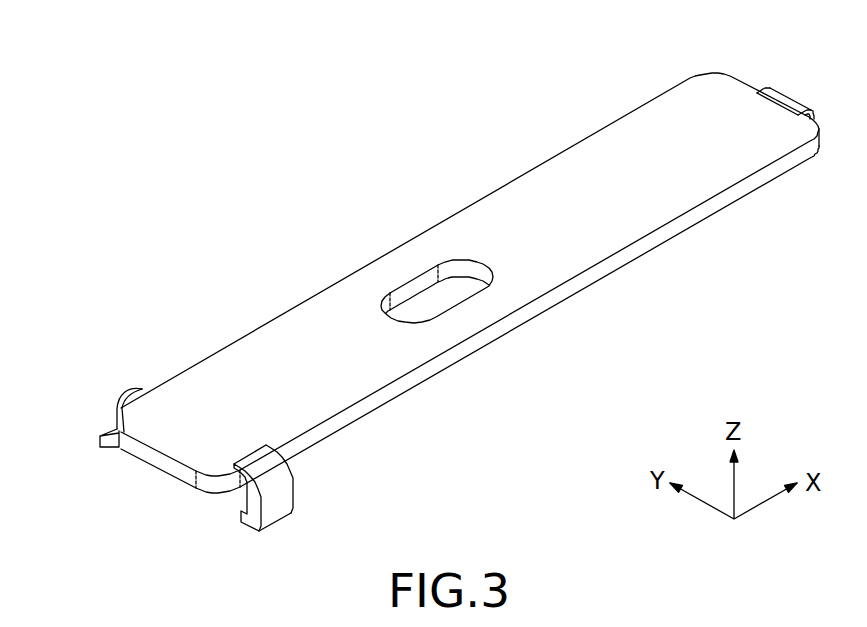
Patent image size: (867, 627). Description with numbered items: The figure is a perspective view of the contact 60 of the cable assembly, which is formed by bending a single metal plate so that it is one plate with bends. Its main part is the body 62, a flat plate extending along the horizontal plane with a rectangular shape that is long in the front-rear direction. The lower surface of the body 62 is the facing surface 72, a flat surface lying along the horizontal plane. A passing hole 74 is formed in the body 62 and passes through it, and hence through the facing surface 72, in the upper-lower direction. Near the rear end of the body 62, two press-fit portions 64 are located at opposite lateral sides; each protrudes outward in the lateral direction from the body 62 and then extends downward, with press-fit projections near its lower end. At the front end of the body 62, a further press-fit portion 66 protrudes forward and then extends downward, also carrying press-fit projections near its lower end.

The contact 60 is at (452, 278).
The body 62 is at (508, 205).
The press-fit portions 64 is at (117, 402).
The press-fit portion 66 is at (787, 92).
The facing surface 72 is at (562, 303).
The passing hole 74 is at (428, 307).